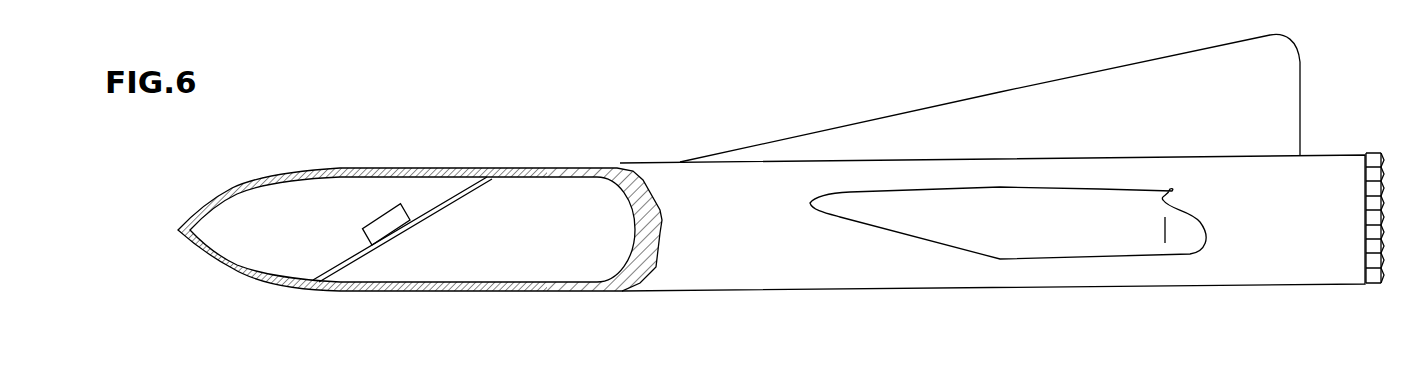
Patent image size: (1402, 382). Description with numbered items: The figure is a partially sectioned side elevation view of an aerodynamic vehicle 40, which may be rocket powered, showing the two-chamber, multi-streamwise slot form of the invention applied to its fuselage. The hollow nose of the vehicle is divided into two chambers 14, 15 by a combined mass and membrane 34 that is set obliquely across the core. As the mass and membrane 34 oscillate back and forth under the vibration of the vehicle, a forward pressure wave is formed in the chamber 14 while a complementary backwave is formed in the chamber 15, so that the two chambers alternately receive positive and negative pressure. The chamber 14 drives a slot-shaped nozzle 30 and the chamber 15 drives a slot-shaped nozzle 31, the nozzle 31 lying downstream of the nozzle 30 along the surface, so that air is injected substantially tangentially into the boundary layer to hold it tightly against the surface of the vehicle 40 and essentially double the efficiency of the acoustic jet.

The chamber 14 is at (275, 246).
The chamber 15 is at (547, 239).
The slot-shaped nozzle 30 is at (227, 193).
The slot-shaped nozzle 31 is at (547, 170).
The combined mass and membrane 34 is at (362, 242).
The aerodynamic vehicle 40 is at (773, 250).